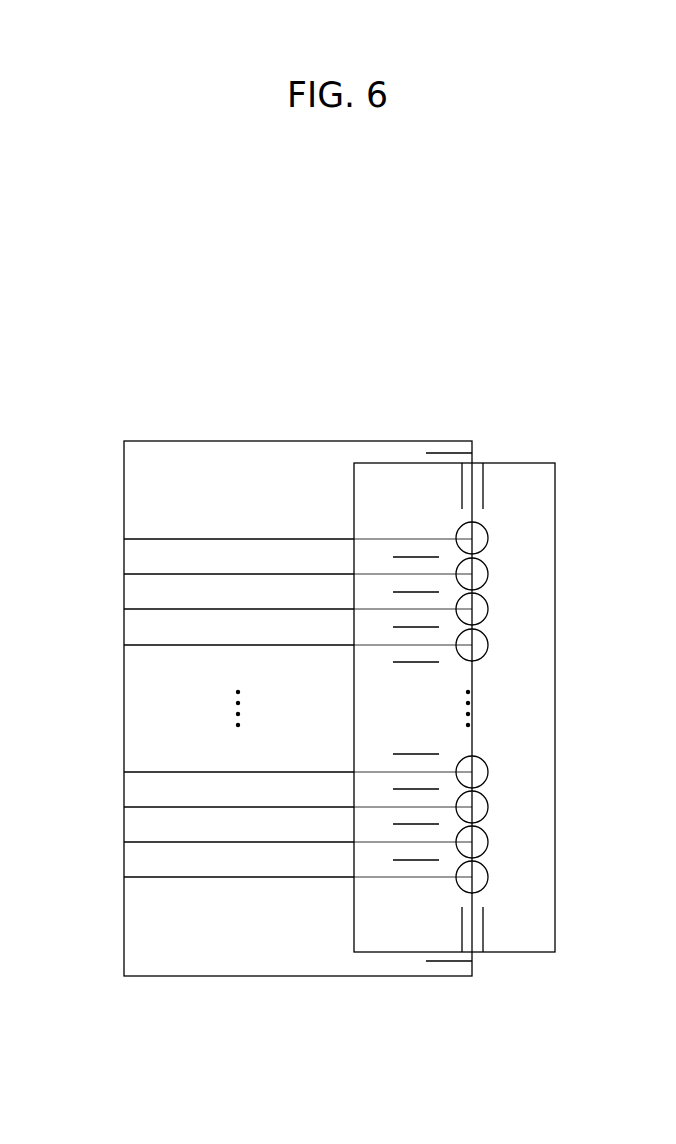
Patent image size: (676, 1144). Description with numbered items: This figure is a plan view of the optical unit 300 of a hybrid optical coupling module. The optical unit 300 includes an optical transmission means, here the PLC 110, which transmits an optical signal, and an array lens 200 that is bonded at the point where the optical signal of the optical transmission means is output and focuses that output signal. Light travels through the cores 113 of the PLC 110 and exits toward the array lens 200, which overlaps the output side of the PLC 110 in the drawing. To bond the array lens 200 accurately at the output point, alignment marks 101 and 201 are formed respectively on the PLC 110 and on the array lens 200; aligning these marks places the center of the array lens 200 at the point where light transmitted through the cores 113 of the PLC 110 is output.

The optical unit 300 is at (329, 356).
The PLC 110 is at (207, 458).
The core 113 is at (148, 538).
The array lens 200 is at (542, 498).
The alignment mark 201 is at (484, 482).
The alignment mark 101 is at (446, 961).